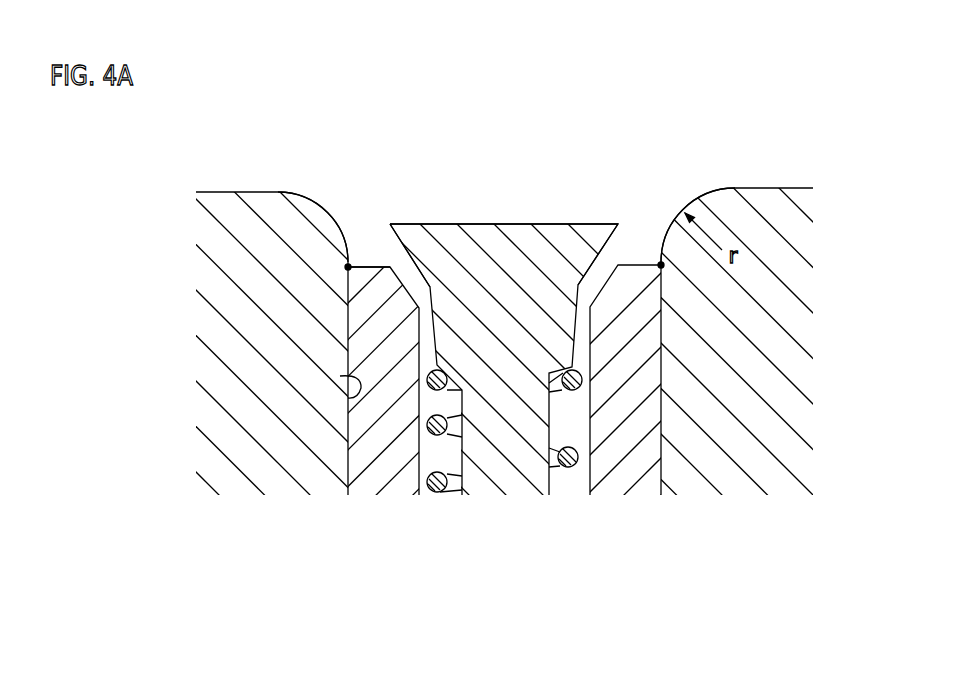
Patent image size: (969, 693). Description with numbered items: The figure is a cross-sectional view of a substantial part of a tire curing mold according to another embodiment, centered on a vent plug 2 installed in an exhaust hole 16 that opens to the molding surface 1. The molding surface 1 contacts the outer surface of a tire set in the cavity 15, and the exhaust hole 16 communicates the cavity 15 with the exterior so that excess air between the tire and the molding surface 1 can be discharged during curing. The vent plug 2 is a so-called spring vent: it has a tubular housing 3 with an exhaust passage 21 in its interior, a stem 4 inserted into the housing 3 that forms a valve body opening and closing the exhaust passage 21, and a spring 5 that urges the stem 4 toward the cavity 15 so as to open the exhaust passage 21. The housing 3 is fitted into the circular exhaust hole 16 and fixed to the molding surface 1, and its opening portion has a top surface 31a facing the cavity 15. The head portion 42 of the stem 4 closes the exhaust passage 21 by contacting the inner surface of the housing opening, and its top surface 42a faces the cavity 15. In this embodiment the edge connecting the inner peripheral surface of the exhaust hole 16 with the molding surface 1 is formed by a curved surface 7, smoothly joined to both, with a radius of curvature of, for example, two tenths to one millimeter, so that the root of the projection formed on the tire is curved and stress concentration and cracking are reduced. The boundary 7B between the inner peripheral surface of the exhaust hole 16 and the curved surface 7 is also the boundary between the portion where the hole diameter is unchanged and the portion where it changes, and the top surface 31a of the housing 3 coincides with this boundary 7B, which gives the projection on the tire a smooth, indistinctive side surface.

The molding surface 1 is at (237, 192).
The vent plug 2 is at (578, 515).
The tubular housing 3 is at (378, 473).
The stem 4 is at (500, 463).
The spring 5 is at (432, 495).
The curved surface 7 is at (327, 213).
The boundary 7B is at (347, 266).
The cavity 15 is at (483, 74).
The exhaust hole 16 is at (340, 376).
The exhaust passage 21 is at (580, 330).
The top surface 31a is at (370, 267).
The head portion 42 is at (467, 253).
The top surface 42a is at (527, 224).